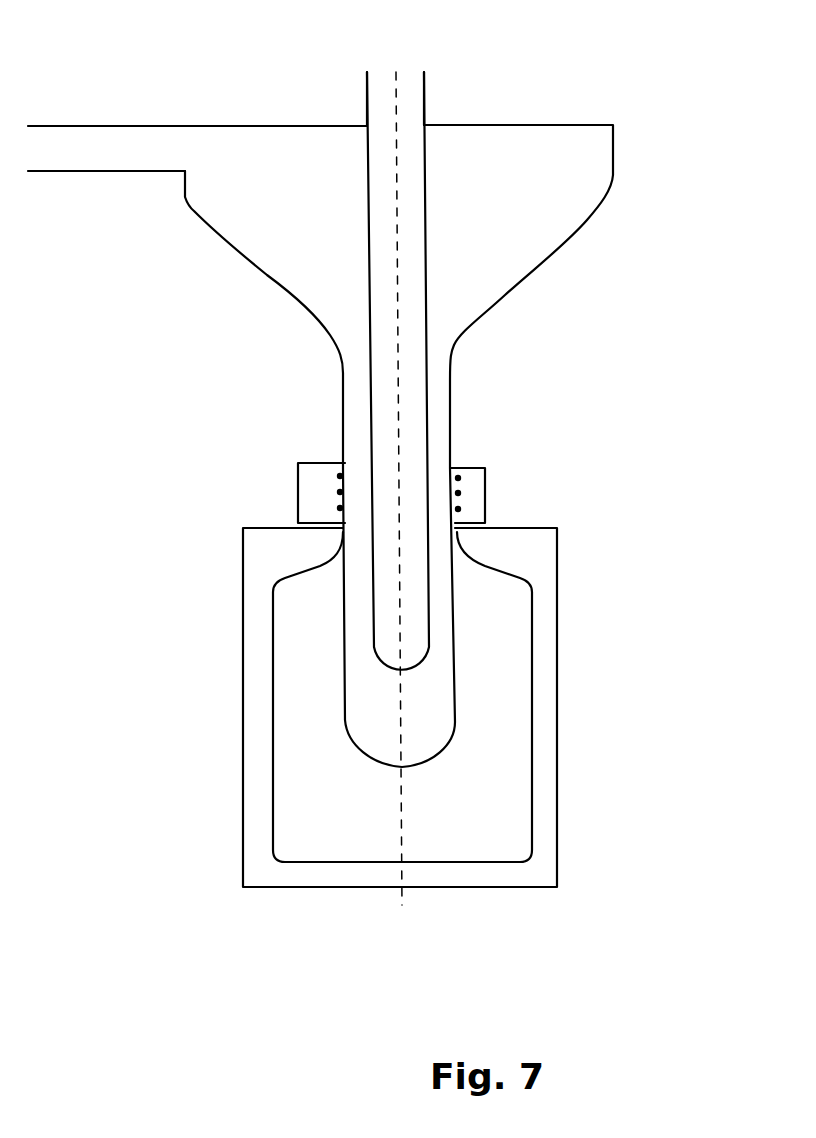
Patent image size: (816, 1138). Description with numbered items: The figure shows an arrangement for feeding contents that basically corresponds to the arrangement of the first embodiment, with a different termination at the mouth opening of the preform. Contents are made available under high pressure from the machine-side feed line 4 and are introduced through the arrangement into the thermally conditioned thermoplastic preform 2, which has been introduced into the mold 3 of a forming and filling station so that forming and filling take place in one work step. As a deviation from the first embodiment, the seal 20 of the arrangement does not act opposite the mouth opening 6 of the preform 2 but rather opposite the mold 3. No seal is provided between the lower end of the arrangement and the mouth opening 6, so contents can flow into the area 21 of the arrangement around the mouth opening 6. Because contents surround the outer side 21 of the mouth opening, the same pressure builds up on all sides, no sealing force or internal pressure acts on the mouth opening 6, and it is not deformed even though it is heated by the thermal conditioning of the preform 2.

The preform 2 is at (457, 720).
The mold 3 is at (545, 615).
The feed line 4 is at (85, 148).
The mouth opening 6 is at (343, 493).
The seal 20 is at (488, 527).
The area around the mouth opening 21 is at (467, 495).